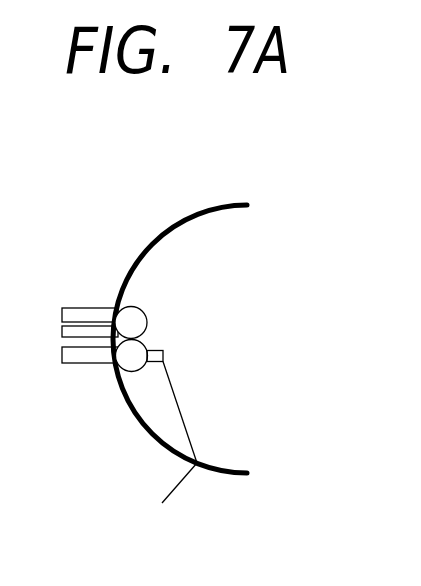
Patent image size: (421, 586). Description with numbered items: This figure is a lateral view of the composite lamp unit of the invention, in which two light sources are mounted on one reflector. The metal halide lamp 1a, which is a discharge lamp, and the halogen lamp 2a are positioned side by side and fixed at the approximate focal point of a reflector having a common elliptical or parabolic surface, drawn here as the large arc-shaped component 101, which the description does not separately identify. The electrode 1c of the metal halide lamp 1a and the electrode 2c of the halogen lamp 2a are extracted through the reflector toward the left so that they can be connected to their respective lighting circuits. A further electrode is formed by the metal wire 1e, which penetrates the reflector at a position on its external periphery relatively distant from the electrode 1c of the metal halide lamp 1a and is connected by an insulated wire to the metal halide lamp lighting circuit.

The photosensitive drum 101 is at (163, 229).
The electrode 2c is at (72, 308).
The electrode 1c is at (72, 364).
The halogen lamp 2a is at (148, 313).
The metal halide lamp 1a is at (146, 342).
The metal wire 1e is at (170, 495).